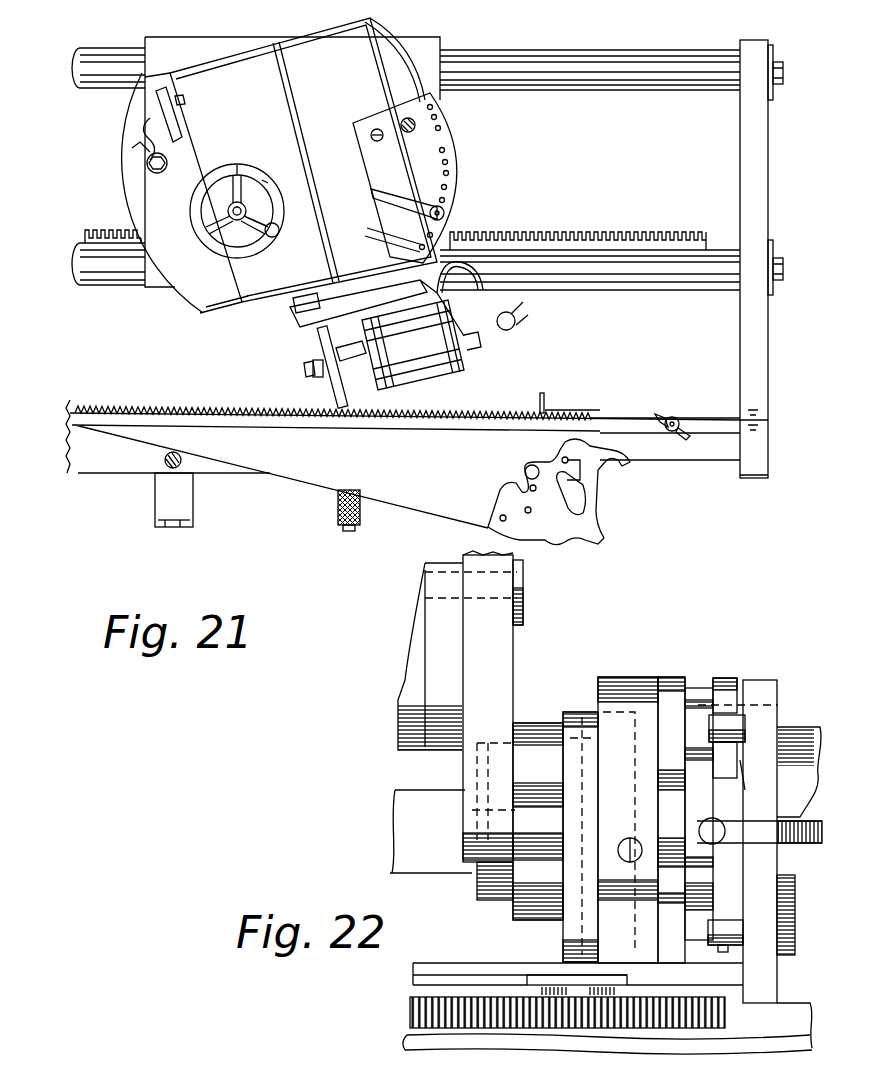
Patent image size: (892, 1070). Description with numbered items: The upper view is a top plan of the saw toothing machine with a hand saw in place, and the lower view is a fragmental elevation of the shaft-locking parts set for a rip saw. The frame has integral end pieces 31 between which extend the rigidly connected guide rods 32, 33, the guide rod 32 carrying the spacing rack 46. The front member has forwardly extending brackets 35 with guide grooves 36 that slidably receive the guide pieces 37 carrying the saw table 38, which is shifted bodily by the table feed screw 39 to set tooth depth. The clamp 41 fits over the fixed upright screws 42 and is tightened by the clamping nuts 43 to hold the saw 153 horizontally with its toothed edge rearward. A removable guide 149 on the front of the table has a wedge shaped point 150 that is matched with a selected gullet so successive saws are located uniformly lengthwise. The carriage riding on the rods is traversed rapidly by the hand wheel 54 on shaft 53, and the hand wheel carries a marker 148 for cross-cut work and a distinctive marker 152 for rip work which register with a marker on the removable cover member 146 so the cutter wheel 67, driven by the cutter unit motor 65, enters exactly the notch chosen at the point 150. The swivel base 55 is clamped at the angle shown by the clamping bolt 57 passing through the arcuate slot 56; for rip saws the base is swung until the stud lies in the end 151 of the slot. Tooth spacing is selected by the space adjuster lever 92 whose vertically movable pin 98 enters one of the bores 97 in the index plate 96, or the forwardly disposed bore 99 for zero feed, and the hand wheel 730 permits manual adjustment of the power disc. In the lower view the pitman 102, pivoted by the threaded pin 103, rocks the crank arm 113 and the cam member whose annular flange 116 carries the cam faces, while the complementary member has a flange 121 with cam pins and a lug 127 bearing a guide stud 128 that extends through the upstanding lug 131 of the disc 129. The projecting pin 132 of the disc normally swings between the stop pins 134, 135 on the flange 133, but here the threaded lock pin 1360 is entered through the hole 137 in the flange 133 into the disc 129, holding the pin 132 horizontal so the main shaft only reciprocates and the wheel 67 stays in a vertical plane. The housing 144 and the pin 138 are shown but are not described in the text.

In FIG. 21, the hand wheel 730 is at (160, 92).
In FIG. 21, the removable cover member 146 is at (350, 50).
In FIG. 21, the end of slot 151 is at (145, 118).
In FIG. 21, the arcuate slot 56 is at (160, 133).
In FIG. 21, the clamping bolt 57 is at (150, 170).
In FIG. 21, the swivel base 55 is at (150, 193).
In FIG. 21, the marker 148 is at (243, 166).
In FIG. 21, the distinctive marker 152 is at (262, 178).
In FIG. 21, the housing 144 is at (307, 215).
In FIG. 21, the space adjuster lever 92 is at (415, 198).
In FIG. 21, the index plate 96 is at (427, 138).
In FIG. 21, the bores 97 is at (447, 183).
In FIG. 21, the vertically movable pin 98 is at (445, 212).
In FIG. 21, the forwardly disposed bore 99 is at (420, 245).
In FIG. 21, the spacing rack 46 is at (605, 232).
In FIG. 21, the guide rod 33 is at (703, 70).
In FIG. 21, the hand wheel 54 is at (283, 232).
In FIG. 21, the shaft 53 is at (252, 238).
In FIG. 21, the guide rod 32 is at (720, 270).
In FIG. 21, the end pieces 31 is at (752, 365).
In FIG. 21, the clamping nuts 43 is at (668, 408).
In FIG. 21, the upright screws 42 is at (680, 415).
In FIG. 21, the wheel 67 is at (330, 385).
In FIG. 21, the cutter unit motor 65 is at (445, 370).
In FIG. 21, the removable guide 149 is at (545, 393).
In FIG. 21, the wedge shaped point 150 is at (548, 410).
In FIG. 21, the clamp 41 is at (468, 425).
In FIG. 21, the guide pieces 37 is at (155, 512).
In FIG. 21, the saw table 38 is at (200, 463).
In FIG. 21, the guide grooves 36 is at (176, 527).
In FIG. 21, the brackets 35 is at (195, 524).
In FIG. 21, the table feed screw 39 is at (340, 522).
In FIG. 21, the saw 153 is at (440, 480).
In FIG. 22, the threaded pin 103 is at (500, 590).
In FIG. 22, the pitman 102 is at (485, 658).
In FIG. 22, the crank arm 113 is at (540, 723).
In FIG. 22, the annular flange 116 is at (577, 712).
In FIG. 22, the flange 121 is at (630, 677).
In FIG. 22, the lug 127 is at (674, 677).
In FIG. 22, the guide stud 128 is at (698, 690).
In FIG. 22, the upstanding lug 131 is at (727, 678).
In FIG. 22, the stop pin 134 is at (733, 727).
In FIG. 22, the flange 133 is at (772, 733).
In FIG. 22, the pin 138 is at (747, 772).
In FIG. 22, the hole 137 is at (767, 800).
In FIG. 22, the threaded lock pin 1360 is at (802, 847).
In FIG. 22, the projecting pin 132 is at (713, 838).
In FIG. 22, the disc 129 is at (697, 917).
In FIG. 22, the stop pin 135 is at (733, 950).